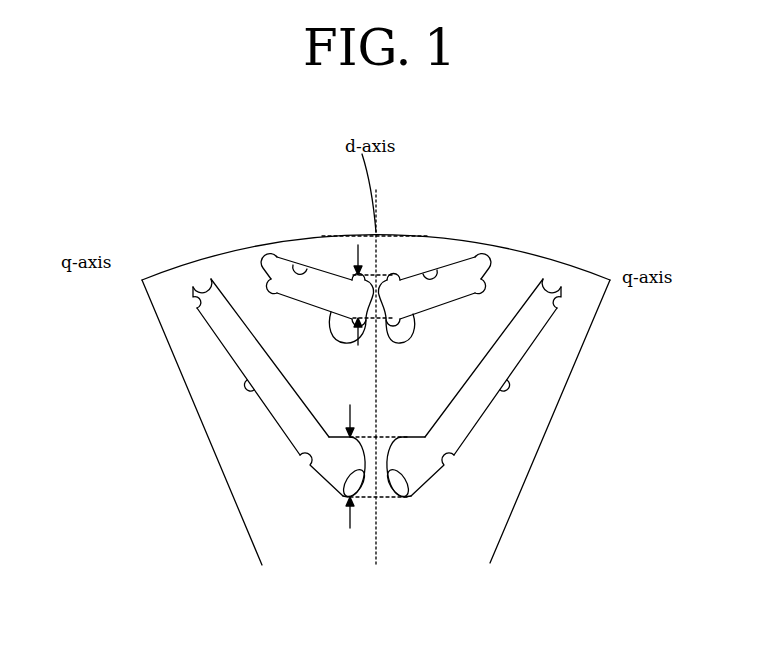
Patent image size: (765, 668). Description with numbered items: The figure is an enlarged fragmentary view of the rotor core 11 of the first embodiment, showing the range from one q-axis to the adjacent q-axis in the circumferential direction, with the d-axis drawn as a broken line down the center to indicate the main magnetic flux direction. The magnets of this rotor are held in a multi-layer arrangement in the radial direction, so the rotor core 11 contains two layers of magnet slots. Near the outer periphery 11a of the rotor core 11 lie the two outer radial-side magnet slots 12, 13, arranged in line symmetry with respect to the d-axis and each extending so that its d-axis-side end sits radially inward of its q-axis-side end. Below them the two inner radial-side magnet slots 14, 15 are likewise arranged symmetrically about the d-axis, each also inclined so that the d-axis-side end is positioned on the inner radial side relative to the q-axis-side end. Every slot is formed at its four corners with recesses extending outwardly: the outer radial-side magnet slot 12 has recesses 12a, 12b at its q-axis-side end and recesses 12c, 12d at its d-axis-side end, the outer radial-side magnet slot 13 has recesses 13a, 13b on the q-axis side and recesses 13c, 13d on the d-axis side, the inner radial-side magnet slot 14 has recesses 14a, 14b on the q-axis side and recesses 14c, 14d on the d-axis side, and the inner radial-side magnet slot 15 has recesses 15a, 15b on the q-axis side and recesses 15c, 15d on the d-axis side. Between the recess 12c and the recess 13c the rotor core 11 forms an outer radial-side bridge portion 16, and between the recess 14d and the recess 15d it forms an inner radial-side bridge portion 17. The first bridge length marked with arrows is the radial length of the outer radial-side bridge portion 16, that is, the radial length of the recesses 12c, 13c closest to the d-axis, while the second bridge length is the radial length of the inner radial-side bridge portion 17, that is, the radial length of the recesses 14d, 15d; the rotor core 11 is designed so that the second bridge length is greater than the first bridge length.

The rotor core 11 is at (308, 540).
The outer periphery 11a is at (547, 262).
The outer radial-side magnet slot 12 is at (302, 263).
The recess 12a is at (271, 278).
The recess 12b is at (260, 262).
The recess 12c is at (355, 274).
The recess 12d is at (329, 310).
The outer radial-side magnet slot 13 is at (430, 270).
The recess 13a is at (488, 298).
The recess 13b is at (494, 262).
The recess 13c is at (401, 277).
The recess 13d is at (443, 305).
The inner radial-side magnet slot 14 is at (248, 386).
The recess 14a is at (196, 312).
The recess 14b is at (193, 279).
The recess 14c is at (300, 455).
The recess 14d is at (345, 498).
The inner radial-side magnet slot 15 is at (506, 386).
The recess 15a is at (558, 312).
The recess 15b is at (561, 279).
The recess 15c is at (454, 455).
The recess 15d is at (410, 497).
The outer radial-side bridge portion 16 is at (376, 298).
The inner radial-side bridge portion 17 is at (370, 470).